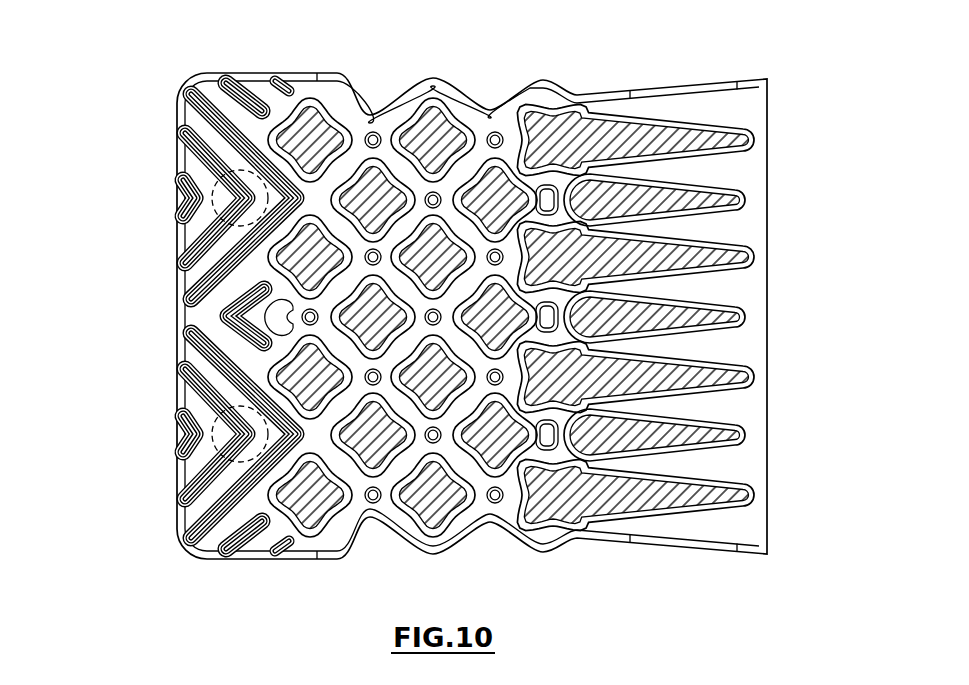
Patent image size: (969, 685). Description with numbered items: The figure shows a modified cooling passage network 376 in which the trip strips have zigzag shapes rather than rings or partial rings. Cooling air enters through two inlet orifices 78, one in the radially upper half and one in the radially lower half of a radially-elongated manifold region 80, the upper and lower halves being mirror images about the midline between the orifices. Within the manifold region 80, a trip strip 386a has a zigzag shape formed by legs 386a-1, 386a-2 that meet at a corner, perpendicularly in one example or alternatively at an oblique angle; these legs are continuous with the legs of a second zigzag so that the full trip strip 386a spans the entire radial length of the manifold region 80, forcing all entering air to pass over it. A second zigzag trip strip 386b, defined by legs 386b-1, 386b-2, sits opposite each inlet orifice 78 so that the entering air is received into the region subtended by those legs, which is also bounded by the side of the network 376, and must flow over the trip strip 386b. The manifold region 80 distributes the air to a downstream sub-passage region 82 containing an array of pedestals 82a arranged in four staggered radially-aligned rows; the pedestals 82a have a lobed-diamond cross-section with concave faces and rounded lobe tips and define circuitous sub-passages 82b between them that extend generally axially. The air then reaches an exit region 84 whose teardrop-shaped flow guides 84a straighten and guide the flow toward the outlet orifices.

The manifold region 80 is at (199, 311).
The sub-passage region 82 is at (411, 298).
The exit region 84 is at (626, 303).
The inlet orifices 78 is at (185, 163).
The cooling passage network 376 is at (716, 570).
The trip strip 386a is at (201, 352).
The leg of trip strip 386a-1 is at (192, 246).
The leg of trip strip 386a-2 is at (188, 152).
The trip strip 386b is at (170, 442).
The leg of trip strip 386b-1 is at (200, 483).
The leg of trip strip 386b-2 is at (200, 388).
The pedestals 82a is at (443, 500).
The sub-passages 82b is at (401, 470).
The flow guides 84a is at (571, 498).